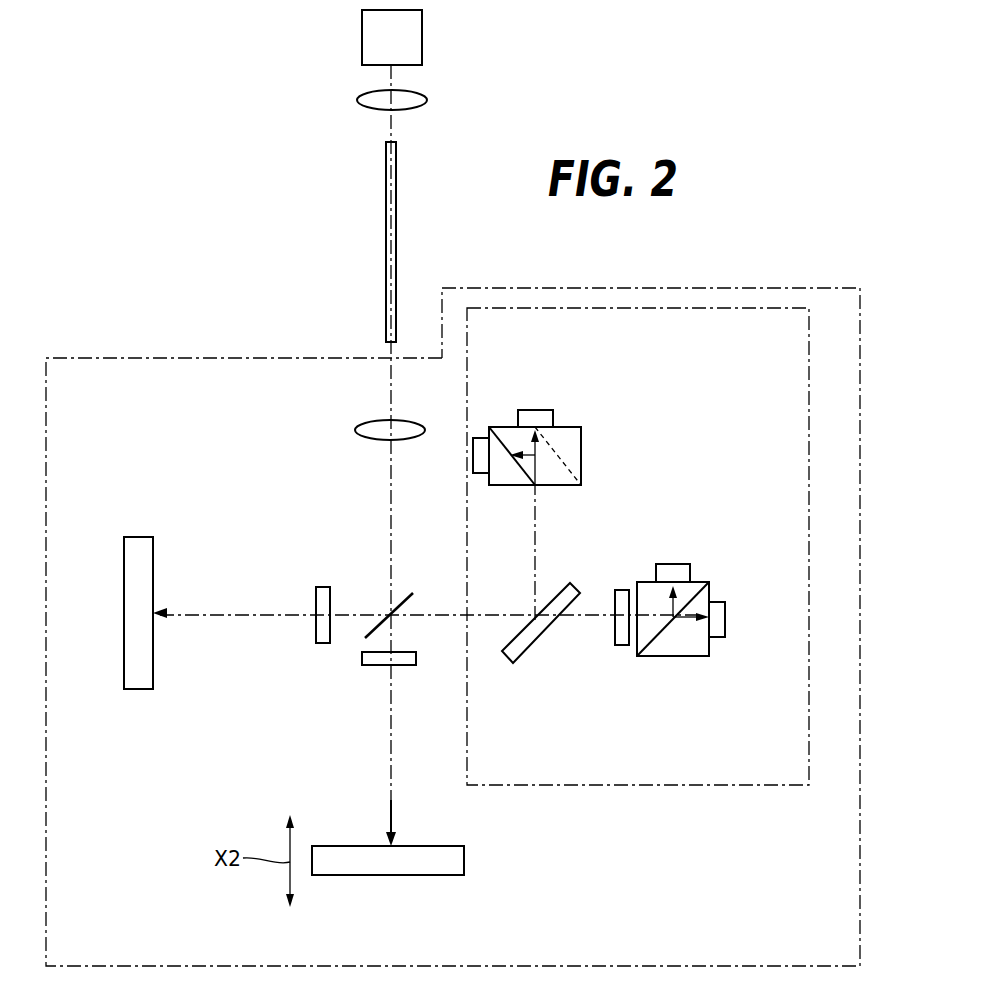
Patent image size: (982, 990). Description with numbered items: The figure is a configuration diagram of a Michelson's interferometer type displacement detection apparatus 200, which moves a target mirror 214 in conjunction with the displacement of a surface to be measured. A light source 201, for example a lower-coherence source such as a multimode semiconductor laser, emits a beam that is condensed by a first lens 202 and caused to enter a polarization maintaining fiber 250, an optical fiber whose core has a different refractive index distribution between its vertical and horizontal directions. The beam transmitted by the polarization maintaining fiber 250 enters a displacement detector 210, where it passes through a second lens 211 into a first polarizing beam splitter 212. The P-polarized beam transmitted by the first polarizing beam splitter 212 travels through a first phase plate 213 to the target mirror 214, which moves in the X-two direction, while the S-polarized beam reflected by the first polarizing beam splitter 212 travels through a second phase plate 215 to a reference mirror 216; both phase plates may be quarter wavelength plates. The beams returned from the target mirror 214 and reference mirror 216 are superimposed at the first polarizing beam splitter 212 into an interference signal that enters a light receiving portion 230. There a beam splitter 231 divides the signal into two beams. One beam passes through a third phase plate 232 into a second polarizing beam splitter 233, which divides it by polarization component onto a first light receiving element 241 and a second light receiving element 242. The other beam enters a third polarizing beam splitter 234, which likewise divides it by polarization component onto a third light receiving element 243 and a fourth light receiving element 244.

The displacement detection apparatus 200 is at (173, 142).
The light source 201 is at (415, 40).
The first lens 202 is at (358, 100).
The polarization maintaining fiber 250 is at (391, 220).
The displacement detector 210 is at (88, 357).
The second lens 211 is at (360, 432).
The first polarizing beam splitter 212 is at (360, 642).
The first phase plate 213 is at (372, 664).
The target mirror 214 is at (430, 870).
The second phase plate 215 is at (322, 592).
The reference mirror 216 is at (138, 686).
The light receiving portion 230 is at (730, 786).
The beam splitter 231 is at (527, 640).
The third phase plate 232 is at (622, 592).
The second polarizing beam splitter 233 is at (700, 595).
The third polarizing beam splitter 234 is at (576, 447).
The first light receiving element 241 is at (718, 637).
The second light receiving element 242 is at (678, 564).
The third light receiving element 243 is at (481, 442).
The fourth light receiving element 244 is at (553, 418).